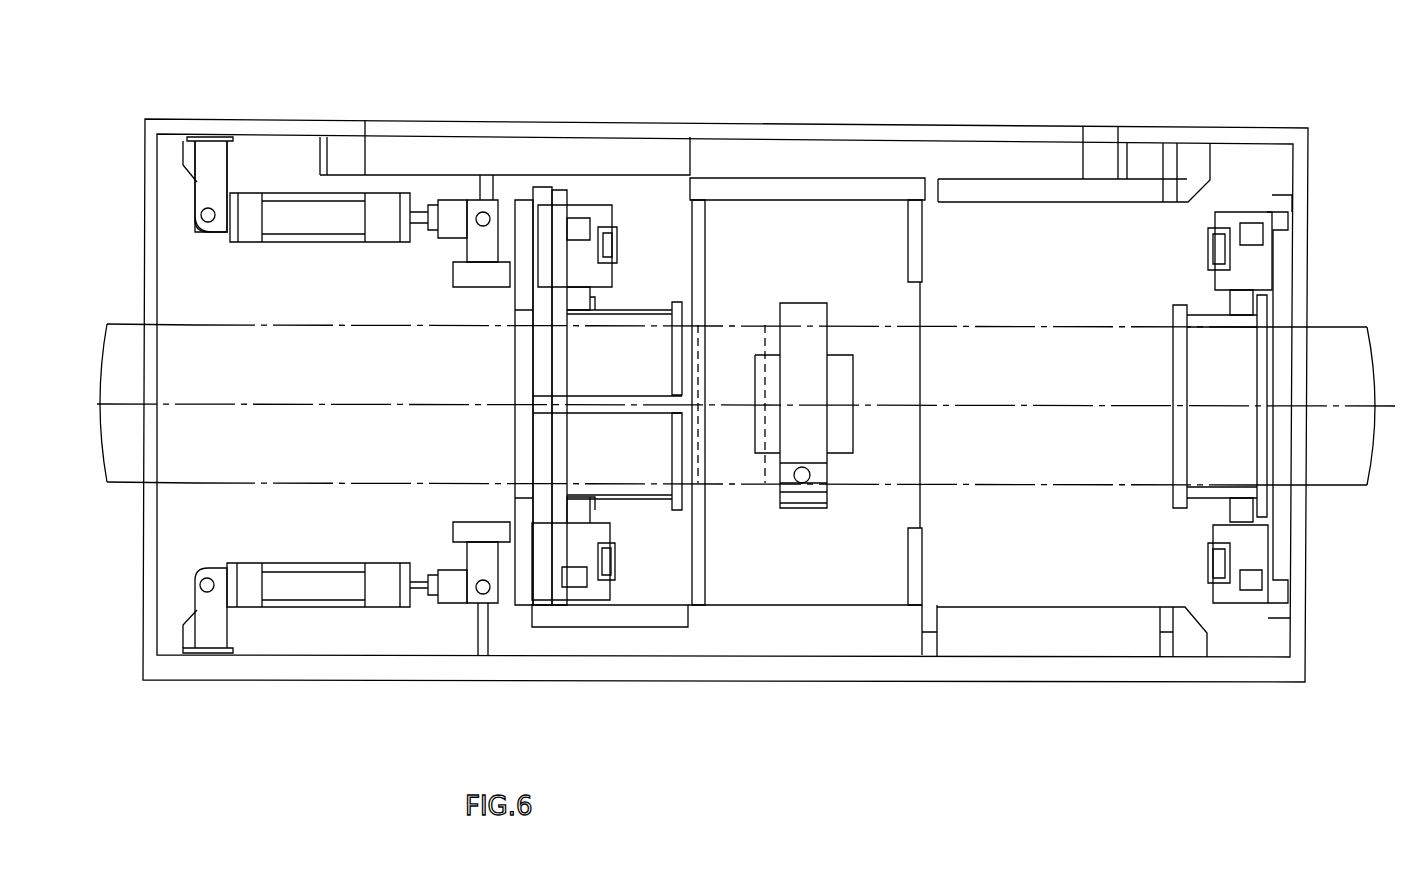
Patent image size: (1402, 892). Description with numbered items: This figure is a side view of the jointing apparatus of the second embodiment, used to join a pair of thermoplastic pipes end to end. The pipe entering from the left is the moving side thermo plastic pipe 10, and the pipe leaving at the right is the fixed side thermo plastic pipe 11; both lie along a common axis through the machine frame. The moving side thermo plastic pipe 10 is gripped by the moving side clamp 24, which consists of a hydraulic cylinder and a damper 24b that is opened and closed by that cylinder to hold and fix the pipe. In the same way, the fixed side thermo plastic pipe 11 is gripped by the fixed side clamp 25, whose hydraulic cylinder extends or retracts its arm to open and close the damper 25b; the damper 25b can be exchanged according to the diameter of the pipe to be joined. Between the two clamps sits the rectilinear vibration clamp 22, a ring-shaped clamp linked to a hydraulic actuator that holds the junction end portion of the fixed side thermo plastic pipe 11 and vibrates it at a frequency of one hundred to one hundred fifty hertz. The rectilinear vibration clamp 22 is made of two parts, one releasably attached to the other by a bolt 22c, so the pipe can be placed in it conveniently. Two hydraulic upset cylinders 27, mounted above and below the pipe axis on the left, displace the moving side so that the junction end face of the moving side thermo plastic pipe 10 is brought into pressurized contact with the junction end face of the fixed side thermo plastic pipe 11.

The moving side thermo plastic pipe 10 is at (114, 324).
The fixed side thermo plastic pipe 11 is at (1335, 327).
The rectilinear vibration clamp 22 is at (808, 303).
The bolt 22c is at (813, 478).
The moving side clamp 24 is at (598, 205).
The damper 24b is at (683, 357).
The fixed side clamp 25 is at (1240, 212).
The damper 25b is at (1172, 366).
The hydraulic upset cylinder 27 is at (290, 196).